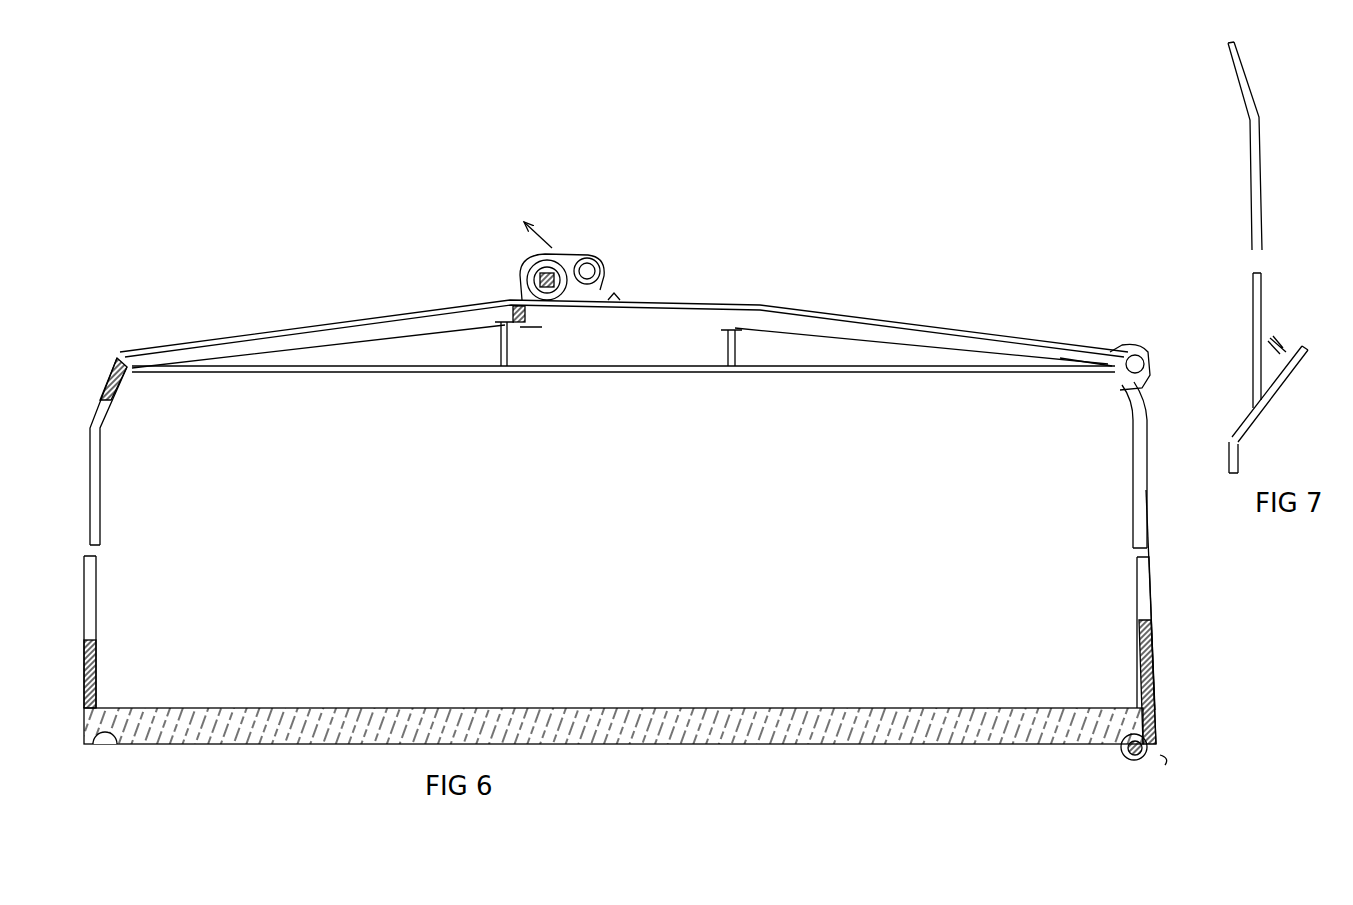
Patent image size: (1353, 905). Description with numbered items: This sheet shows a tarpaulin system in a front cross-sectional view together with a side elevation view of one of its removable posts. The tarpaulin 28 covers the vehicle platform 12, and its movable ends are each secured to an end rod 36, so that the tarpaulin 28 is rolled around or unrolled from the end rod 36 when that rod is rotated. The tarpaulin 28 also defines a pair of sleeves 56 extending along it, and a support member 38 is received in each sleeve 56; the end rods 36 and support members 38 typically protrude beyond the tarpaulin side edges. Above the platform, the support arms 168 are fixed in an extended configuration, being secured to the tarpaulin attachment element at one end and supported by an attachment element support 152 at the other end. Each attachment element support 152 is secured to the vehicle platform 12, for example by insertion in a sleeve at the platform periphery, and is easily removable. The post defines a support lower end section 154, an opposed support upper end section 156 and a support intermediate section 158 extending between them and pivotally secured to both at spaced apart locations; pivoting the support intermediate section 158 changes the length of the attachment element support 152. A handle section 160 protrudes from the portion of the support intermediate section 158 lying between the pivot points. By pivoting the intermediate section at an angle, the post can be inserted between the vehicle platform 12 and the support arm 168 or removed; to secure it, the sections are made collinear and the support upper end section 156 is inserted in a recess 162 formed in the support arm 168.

In FIG. 6, the vehicle platform 12 is at (680, 720).
In FIG. 6, the tarpaulin 28 is at (1152, 540).
In FIG. 6, the end rod 36 is at (1134, 747).
In FIG. 6, the support member 38 is at (1144, 371).
In FIG. 6, the sleeve 56 is at (1128, 356).
In FIG. 6, the attachment element support 152 is at (1128, 478).
In FIG. 7, the attachment element support 152 is at (1238, 195).
In FIG. 7, the support lower end section 154 is at (1230, 445).
In FIG. 7, the support upper end section 156 is at (1246, 93).
In FIG. 7, the support intermediate section 158 is at (1245, 415).
In FIG. 7, the handle section 160 is at (1293, 347).
In FIG. 6, the recess 162 is at (1108, 352).
In FIG. 6, the support arm 168 is at (806, 327).